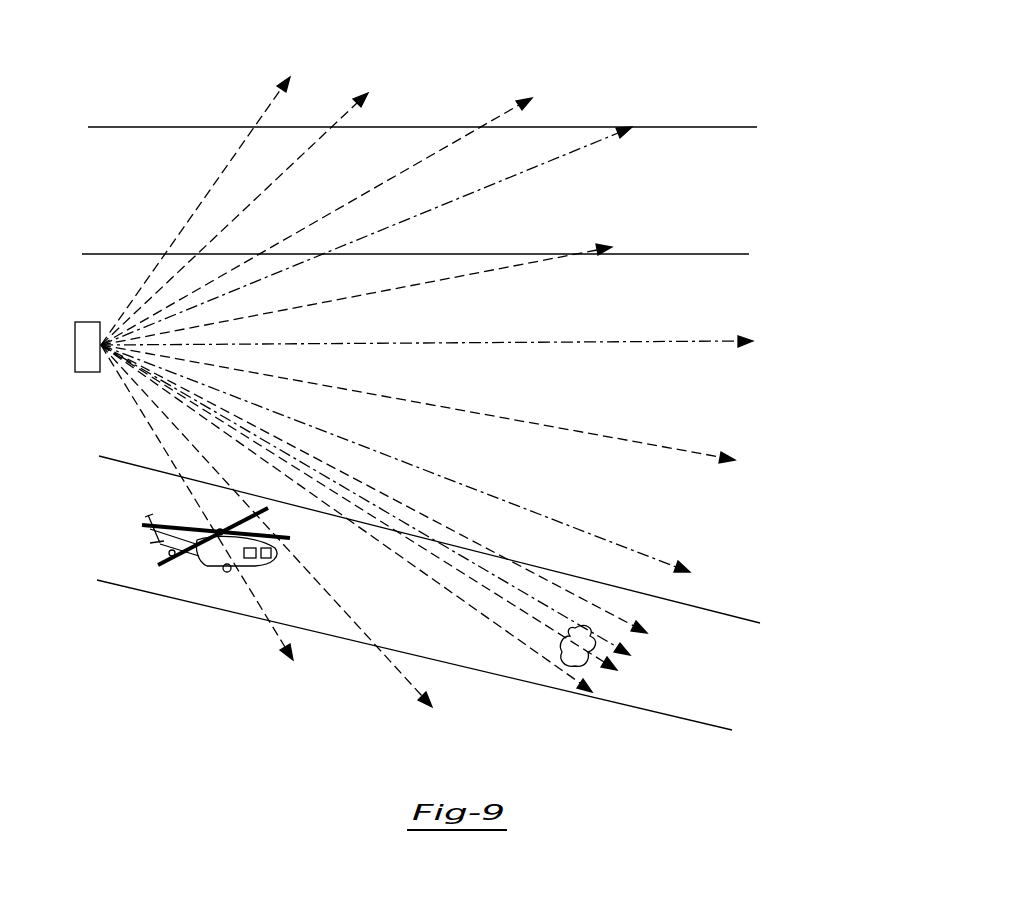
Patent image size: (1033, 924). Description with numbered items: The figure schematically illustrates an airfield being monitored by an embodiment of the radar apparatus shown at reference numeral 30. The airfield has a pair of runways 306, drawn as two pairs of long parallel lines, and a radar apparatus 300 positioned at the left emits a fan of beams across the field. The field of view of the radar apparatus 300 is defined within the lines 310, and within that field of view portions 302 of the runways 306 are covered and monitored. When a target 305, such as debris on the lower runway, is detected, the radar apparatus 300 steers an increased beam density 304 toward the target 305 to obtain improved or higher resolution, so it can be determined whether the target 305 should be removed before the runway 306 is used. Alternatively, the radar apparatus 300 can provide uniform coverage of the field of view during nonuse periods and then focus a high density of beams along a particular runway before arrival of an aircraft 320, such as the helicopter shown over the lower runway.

The radar apparatus 300 is at (83, 328).
The portions of the runways 302 is at (555, 183).
The increased beam density 304 is at (500, 602).
The target 305 is at (577, 662).
The runways 306 is at (226, 115).
The lines 310 is at (212, 177).
The aircraft 320 is at (135, 543).
The radar apparatus embodiment 30 is at (245, 646).